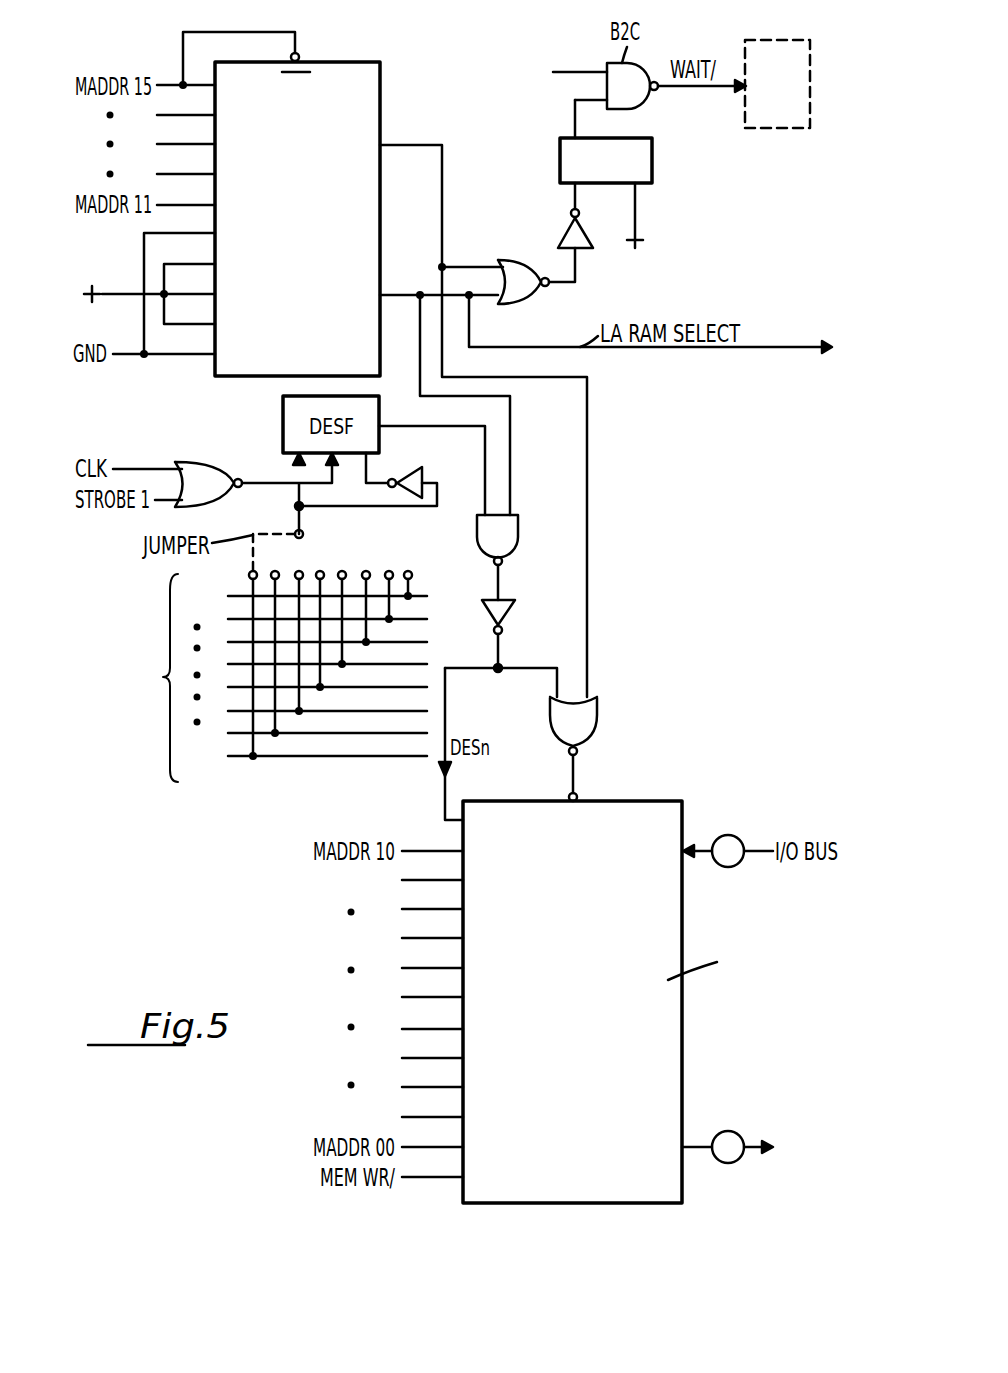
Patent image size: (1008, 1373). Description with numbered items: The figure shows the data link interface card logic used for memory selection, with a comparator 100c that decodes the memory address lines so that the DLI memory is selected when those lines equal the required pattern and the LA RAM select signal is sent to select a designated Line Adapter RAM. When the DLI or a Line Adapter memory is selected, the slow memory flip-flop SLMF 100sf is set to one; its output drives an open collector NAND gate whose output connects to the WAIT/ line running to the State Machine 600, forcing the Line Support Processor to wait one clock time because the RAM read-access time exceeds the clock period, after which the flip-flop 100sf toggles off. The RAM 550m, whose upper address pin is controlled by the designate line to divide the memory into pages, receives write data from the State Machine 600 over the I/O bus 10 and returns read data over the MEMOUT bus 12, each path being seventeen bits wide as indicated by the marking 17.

The comparator 100c is at (356, 62).
The slow memory flip-flop (SLMF) 100sf is at (652, 163).
The State Machine 600 is at (782, 128).
The I/O bus 10 is at (248, 676).
The MEMOUT bus 12 is at (694, 1147).
The 4K x 17 RAM (DLI memory) 550m is at (650, 1002).
The bus width indicator 17 is at (727, 999).